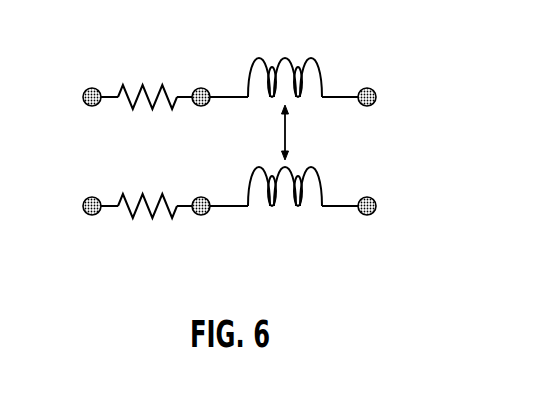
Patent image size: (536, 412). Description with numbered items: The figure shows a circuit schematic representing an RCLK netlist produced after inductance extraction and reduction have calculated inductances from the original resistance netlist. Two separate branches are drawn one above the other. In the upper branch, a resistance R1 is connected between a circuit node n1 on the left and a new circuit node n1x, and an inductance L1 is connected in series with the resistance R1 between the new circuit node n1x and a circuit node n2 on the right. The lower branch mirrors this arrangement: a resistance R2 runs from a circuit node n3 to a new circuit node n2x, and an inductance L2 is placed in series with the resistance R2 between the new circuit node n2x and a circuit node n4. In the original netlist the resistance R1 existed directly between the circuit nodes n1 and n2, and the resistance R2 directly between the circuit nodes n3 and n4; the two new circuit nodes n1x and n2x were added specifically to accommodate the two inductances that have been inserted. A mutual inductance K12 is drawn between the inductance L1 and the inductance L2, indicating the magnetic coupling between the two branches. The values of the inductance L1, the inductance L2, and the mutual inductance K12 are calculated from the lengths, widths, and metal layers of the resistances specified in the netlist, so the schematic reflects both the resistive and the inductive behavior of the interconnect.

The circuit node n1 is at (76, 96).
The circuit node n2 is at (382, 96).
The circuit node n3 is at (76, 205).
The circuit node n4 is at (383, 205).
The new circuit node n1x is at (206, 82).
The new circuit node n2x is at (198, 220).
The resistance R1 is at (147, 83).
The resistance R2 is at (147, 192).
The inductance L1 is at (285, 63).
The inductance L2 is at (284, 207).
The mutual inductance K12 is at (305, 132).